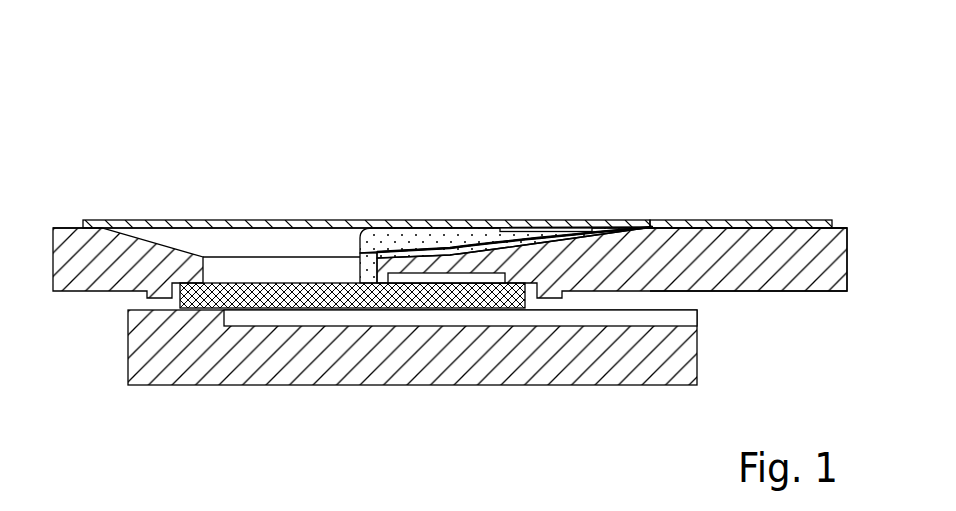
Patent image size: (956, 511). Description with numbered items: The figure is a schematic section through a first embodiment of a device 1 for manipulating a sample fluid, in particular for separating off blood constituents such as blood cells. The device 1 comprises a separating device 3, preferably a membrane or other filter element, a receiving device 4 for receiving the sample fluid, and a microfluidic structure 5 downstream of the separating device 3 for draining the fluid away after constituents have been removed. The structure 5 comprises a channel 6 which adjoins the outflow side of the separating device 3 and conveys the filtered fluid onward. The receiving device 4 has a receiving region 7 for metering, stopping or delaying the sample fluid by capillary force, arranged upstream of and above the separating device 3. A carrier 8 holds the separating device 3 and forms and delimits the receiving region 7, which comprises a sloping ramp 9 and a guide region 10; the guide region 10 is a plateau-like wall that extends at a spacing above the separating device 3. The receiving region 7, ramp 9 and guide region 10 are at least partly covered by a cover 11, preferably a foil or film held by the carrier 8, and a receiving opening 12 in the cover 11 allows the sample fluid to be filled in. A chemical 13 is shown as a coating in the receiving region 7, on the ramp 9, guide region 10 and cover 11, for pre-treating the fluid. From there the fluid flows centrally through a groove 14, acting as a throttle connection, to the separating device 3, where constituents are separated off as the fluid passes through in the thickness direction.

The device 1 is at (130, 149).
The separating device 3 is at (226, 283).
The receiving device 4 is at (411, 200).
The microfluidic structure 5 is at (351, 332).
The channel 6 is at (680, 319).
The receiving region 7 is at (504, 226).
The carrier 8 is at (833, 250).
The sloping ramp 9 is at (630, 233).
The guide region 10 is at (392, 262).
The cover 11 is at (737, 223).
The receiving opening 12 is at (623, 222).
The chemical 13 is at (522, 245).
The groove 14 is at (357, 258).